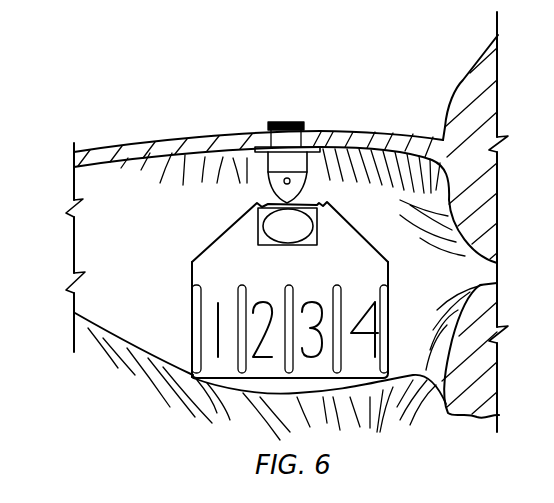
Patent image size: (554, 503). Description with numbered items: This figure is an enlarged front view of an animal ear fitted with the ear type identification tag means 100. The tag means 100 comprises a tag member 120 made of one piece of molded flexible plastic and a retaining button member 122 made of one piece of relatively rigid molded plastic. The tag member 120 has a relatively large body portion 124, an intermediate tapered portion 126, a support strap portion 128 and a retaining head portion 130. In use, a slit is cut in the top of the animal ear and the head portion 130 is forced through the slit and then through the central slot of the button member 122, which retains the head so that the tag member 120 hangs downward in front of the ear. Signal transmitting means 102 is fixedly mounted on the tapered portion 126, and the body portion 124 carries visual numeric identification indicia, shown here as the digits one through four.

The ear type identification tag means 100 is at (375, 243).
The signal transmitting means 102 is at (265, 225).
The tag member 120 is at (192, 280).
The retaining button member 122 is at (315, 140).
The body portion 124 is at (360, 282).
The intermediate tapered portion 126 is at (320, 222).
The support strap portion 128 is at (284, 122).
The retaining head portion 130 is at (268, 170).